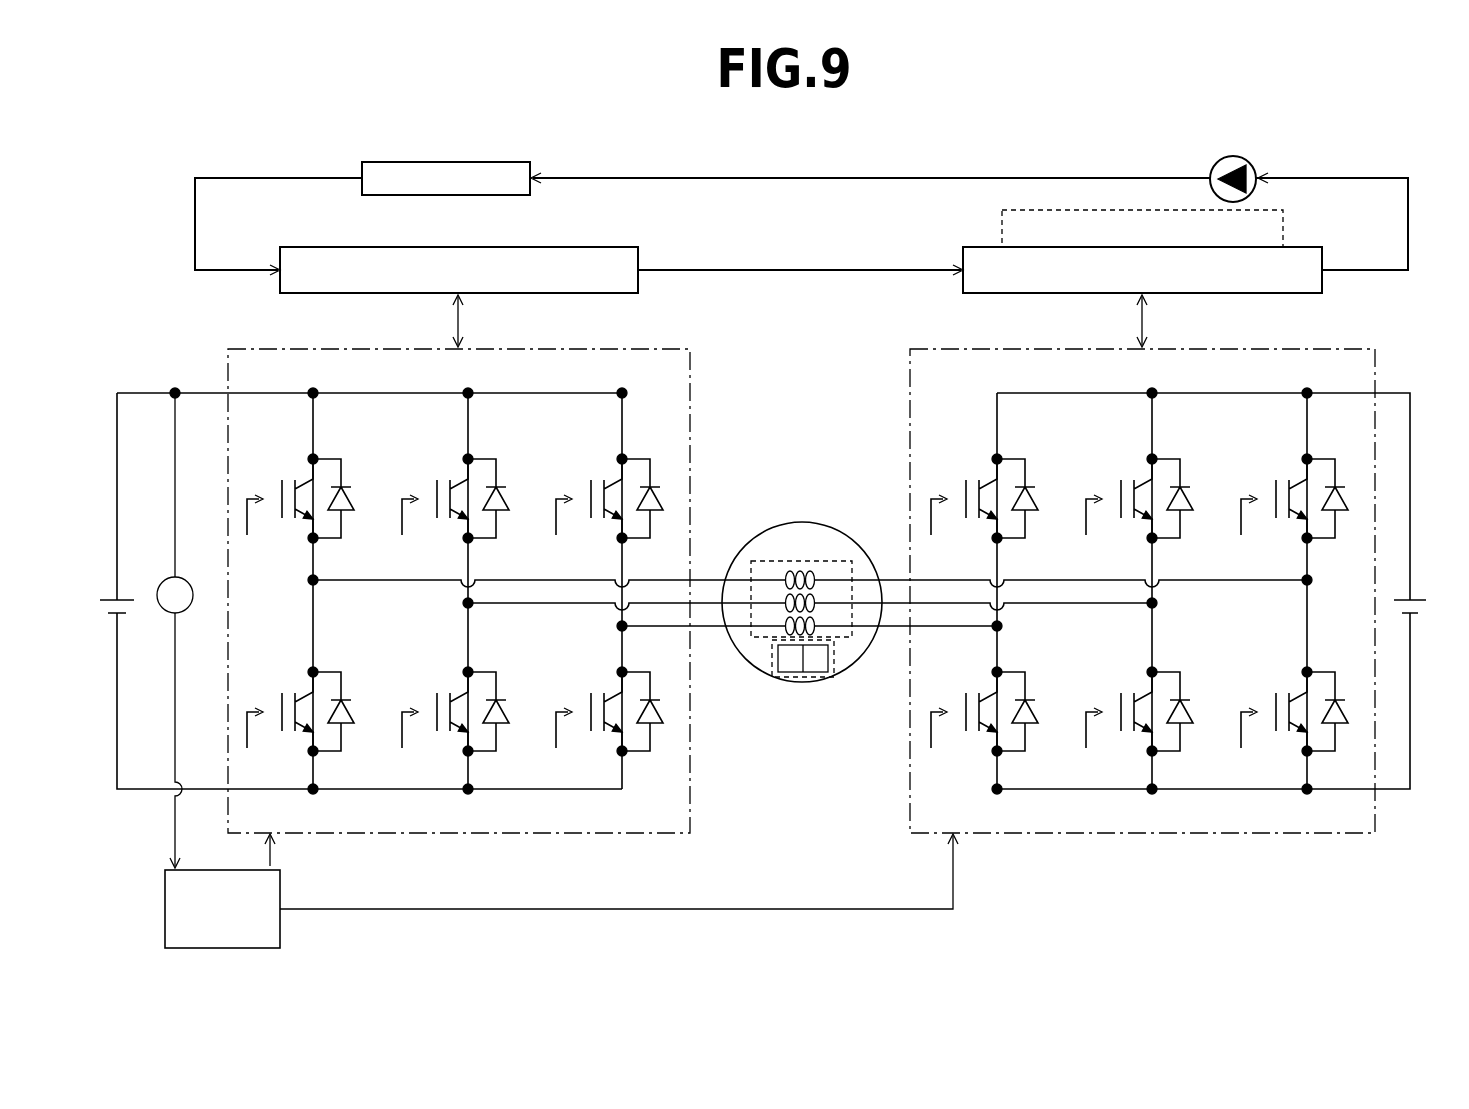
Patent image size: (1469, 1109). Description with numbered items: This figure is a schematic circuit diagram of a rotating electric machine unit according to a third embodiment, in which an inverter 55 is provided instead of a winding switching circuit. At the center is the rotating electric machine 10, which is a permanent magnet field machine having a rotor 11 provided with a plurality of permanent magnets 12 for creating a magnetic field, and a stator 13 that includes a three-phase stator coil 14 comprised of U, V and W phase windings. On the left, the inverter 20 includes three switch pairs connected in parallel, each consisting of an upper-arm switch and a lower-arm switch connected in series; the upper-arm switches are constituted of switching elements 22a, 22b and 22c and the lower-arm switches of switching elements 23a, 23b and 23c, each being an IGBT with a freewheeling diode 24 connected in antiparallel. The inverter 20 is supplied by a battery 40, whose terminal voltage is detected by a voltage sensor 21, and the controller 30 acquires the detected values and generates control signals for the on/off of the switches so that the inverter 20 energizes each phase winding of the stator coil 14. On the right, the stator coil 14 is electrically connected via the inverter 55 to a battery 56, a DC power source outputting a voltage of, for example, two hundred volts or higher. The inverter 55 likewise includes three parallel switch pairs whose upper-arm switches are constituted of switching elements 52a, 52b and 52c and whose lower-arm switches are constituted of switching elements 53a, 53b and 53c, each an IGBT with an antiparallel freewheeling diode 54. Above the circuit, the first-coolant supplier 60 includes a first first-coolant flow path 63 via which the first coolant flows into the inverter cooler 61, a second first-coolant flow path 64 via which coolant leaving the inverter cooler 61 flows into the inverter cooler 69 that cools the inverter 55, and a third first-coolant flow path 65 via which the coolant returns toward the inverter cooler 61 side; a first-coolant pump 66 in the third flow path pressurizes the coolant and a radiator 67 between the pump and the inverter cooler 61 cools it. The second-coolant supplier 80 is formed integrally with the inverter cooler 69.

The rotating electric machine 10 is at (862, 517).
The rotor 11 is at (790, 683).
The permanent magnet 12 is at (806, 674).
The stator 13 is at (818, 561).
The stator coil 14 is at (788, 573).
The inverter 20 is at (693, 366).
The voltage sensor 21 is at (188, 579).
The switching element 22a is at (309, 479).
The switching element 22b is at (464, 479).
The switching element 22c is at (618, 479).
The switching element 23a is at (309, 692).
The switching element 23b is at (464, 692).
The switching element 23c is at (618, 692).
The freewheeling diode 24 is at (345, 487).
The controller 30 is at (282, 928).
The battery 40 is at (124, 600).
The switching element 52a is at (993, 479).
The switching element 52b is at (1148, 479).
The switching element 52c is at (1303, 479).
The switching element 53a is at (993, 692).
The switching element 53b is at (1148, 692).
The switching element 53c is at (1303, 692).
The freewheeling diode 54 is at (1029, 487).
The inverter 55 is at (1377, 366).
The battery 56 is at (1417, 602).
The first-coolant supplier 60 is at (1420, 171).
The inverter cooler 61 is at (576, 247).
The first first-coolant flow path 63 is at (188, 247).
The second first-coolant flow path 64 is at (808, 268).
The third first-coolant flow path 65 is at (1408, 249).
The first-coolant pump 66 is at (1244, 158).
The radiator 67 is at (482, 162).
The inverter cooler 69 is at (1299, 247).
The second-coolant supplier 80 is at (1000, 226).